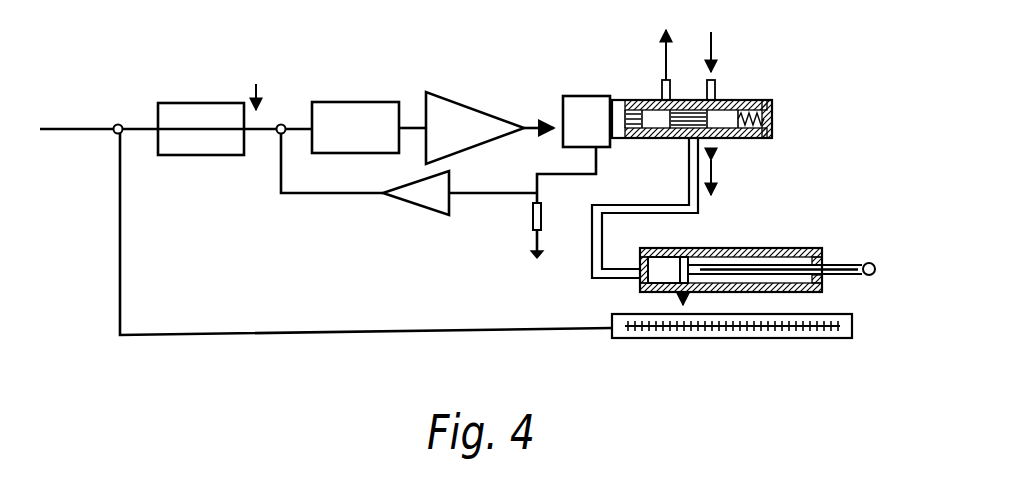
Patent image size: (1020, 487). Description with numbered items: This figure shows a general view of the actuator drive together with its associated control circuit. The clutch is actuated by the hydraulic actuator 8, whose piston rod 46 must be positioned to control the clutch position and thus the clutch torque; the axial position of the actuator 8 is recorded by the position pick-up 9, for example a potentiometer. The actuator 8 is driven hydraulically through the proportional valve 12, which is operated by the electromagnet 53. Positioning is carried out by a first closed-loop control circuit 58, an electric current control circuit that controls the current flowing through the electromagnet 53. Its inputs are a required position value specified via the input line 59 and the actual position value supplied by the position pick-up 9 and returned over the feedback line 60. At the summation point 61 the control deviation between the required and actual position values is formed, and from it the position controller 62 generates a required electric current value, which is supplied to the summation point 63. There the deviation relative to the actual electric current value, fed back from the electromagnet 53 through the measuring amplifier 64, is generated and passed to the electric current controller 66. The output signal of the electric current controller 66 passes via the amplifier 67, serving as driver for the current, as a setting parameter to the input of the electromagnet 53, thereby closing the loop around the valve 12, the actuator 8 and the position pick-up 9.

The closed-loop control circuit 58 is at (186, 85).
The input line 59 is at (83, 136).
The feedback line 60 is at (275, 332).
The summation point 61 is at (114, 125).
The position controller 62 is at (208, 144).
The summation point 63 is at (284, 124).
The electric current controller 66 is at (367, 116).
The amplifier 67 is at (462, 115).
The measuring amplifier 64 is at (412, 194).
The electromagnet 53 is at (588, 110).
The proportional valve 12 is at (690, 154).
The hydraulic actuator 8 is at (790, 248).
The piston rod 46 is at (848, 262).
The position pick-up 9 is at (836, 314).